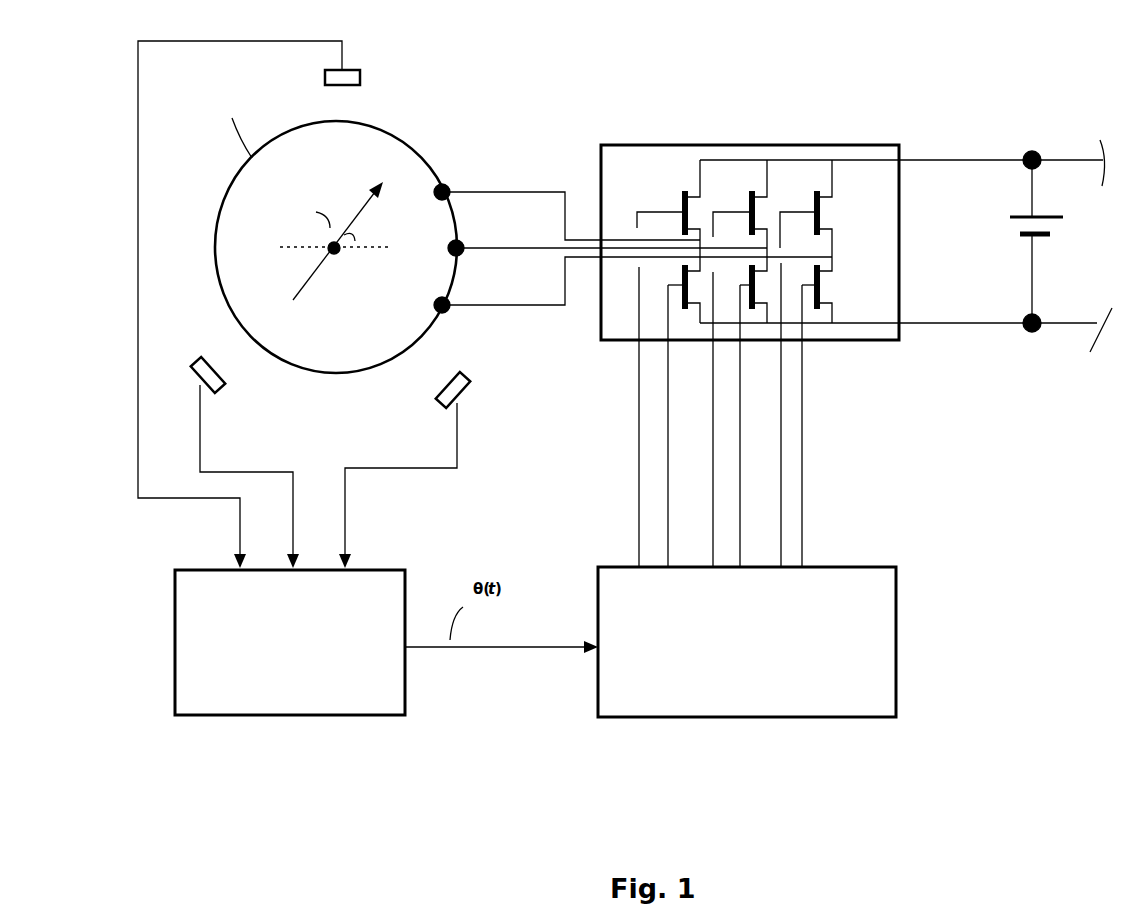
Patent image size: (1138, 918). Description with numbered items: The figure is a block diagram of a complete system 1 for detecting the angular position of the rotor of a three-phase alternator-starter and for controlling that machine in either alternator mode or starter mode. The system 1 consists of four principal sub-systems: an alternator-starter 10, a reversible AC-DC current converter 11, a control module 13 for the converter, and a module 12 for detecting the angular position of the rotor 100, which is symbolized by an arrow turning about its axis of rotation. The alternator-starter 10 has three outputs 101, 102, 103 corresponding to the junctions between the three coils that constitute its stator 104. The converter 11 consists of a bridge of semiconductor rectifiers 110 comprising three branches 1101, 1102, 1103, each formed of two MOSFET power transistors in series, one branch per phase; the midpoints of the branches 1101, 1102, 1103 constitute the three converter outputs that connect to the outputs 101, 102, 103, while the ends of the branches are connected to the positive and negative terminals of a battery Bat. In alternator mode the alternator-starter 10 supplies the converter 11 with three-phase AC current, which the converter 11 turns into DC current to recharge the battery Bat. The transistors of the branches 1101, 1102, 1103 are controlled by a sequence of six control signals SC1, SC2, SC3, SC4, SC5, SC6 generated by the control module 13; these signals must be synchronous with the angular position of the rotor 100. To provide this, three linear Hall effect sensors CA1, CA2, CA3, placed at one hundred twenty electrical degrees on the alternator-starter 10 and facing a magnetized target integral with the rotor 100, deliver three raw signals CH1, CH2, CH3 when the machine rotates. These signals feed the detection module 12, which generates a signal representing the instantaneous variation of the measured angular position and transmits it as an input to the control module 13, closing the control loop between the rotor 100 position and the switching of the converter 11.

The system 1 is at (491, 826).
The alternator-starter 10 is at (416, 149).
The rotor 100 is at (314, 262).
The first output 101 is at (452, 185).
The second output 102 is at (466, 243).
The third output 103 is at (452, 304).
The stator 104 is at (254, 162).
The reversible AC-DC current converter 11 is at (686, 146).
The bridge of semiconductor rectifiers 110 is at (850, 143).
The first branch 1101 is at (710, 194).
The second branch 1102 is at (784, 190).
The third branch 1103 is at (842, 190).
The module for detecting the angular position of the rotor 12 is at (292, 718).
The control module 13 is at (826, 719).
The first linear Hall effect sensor CA1 is at (362, 77).
The second linear Hall effect sensor CA2 is at (216, 389).
The third linear Hall effect sensor CA3 is at (466, 389).
The first raw signal CH1 is at (134, 288).
The second raw signal CH2 is at (287, 470).
The third raw signal CH3 is at (407, 472).
The first control signal SC1 is at (712, 405).
The second control signal SC2 is at (667, 470).
The third control signal SC3 is at (638, 500).
The fourth control signal SC4 is at (742, 410).
The fifth control signal SC5 is at (783, 440).
The sixth control signal SC6 is at (802, 484).
The battery Bat is at (1052, 234).